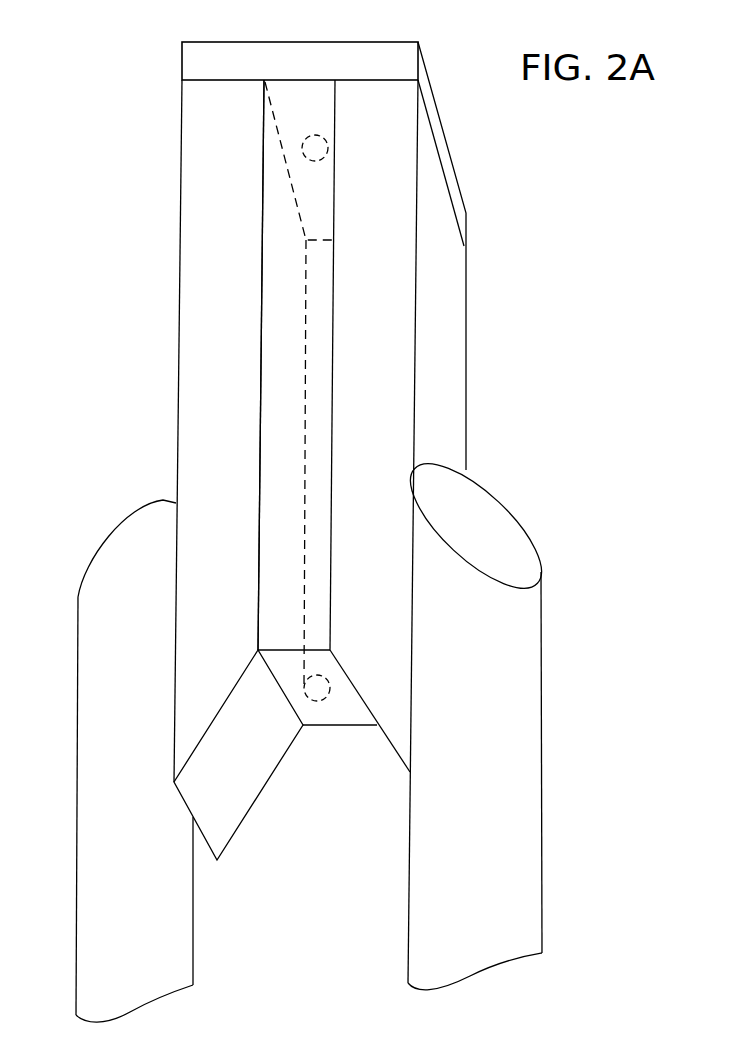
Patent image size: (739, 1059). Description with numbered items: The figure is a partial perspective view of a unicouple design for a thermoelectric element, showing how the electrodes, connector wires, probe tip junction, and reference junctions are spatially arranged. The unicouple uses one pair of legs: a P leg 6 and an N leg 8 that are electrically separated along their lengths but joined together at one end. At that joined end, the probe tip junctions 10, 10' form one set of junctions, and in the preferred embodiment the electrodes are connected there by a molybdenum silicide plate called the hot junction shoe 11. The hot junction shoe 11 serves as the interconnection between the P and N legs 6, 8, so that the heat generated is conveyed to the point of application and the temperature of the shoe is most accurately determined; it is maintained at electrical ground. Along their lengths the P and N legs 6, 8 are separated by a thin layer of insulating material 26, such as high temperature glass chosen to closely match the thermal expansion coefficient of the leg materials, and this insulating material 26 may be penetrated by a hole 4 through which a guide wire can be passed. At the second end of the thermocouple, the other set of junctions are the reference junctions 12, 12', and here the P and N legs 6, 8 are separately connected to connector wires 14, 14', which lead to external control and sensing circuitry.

The hole 4 is at (317, 136).
The P leg 6 is at (183, 297).
The N leg 8 is at (458, 277).
The probe tip junction 10 is at (234, 365).
The probe tip junction 10' is at (367, 365).
The hot junction shoe 11 is at (333, 52).
The reference junction 12 is at (256, 700).
The reference junction 12' is at (371, 711).
The connector wire 14 is at (113, 761).
The connector wire 14' is at (500, 781).
The insulating material 26 is at (284, 366).